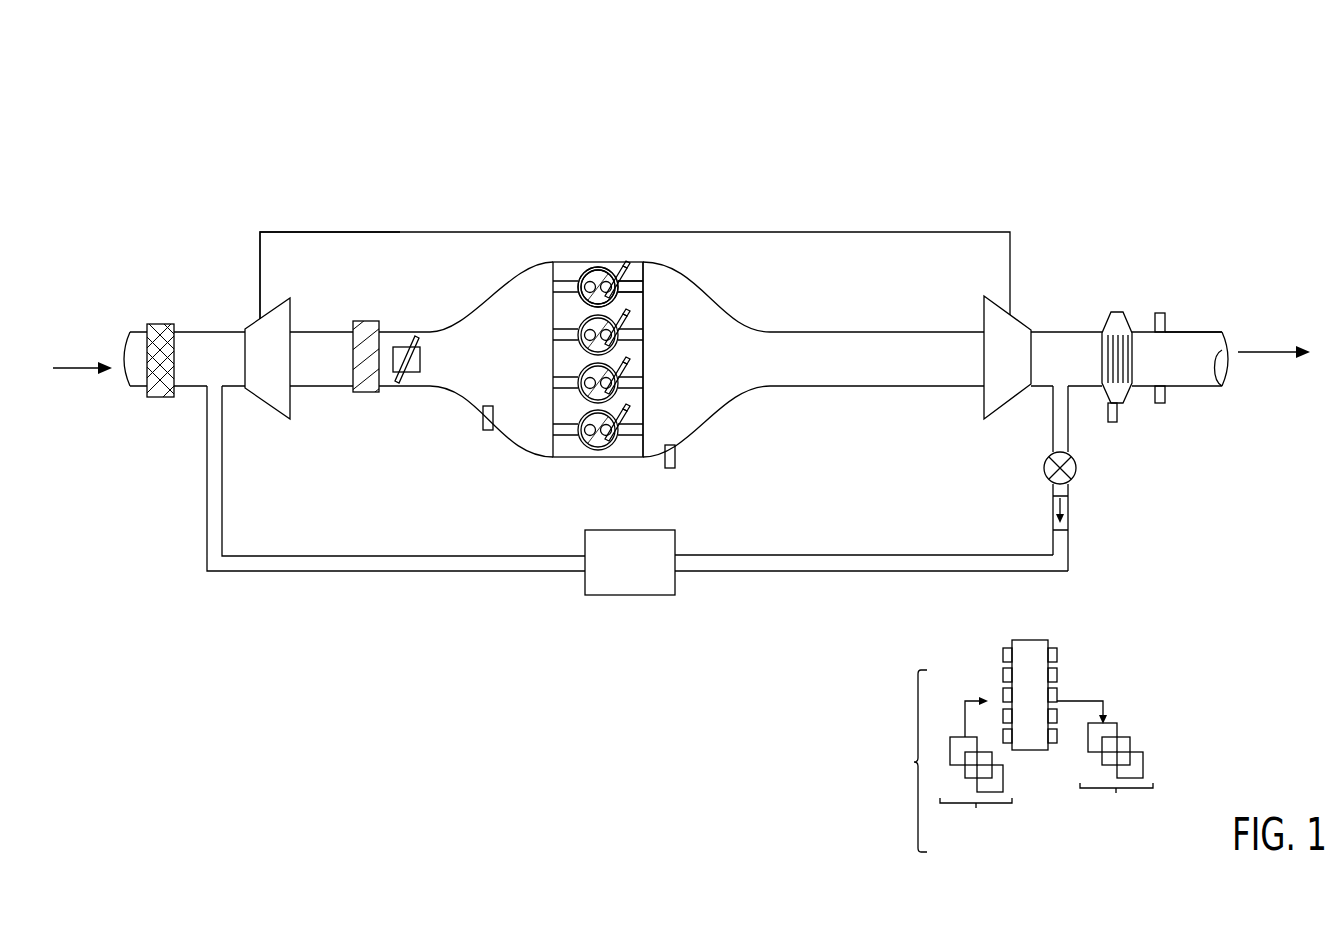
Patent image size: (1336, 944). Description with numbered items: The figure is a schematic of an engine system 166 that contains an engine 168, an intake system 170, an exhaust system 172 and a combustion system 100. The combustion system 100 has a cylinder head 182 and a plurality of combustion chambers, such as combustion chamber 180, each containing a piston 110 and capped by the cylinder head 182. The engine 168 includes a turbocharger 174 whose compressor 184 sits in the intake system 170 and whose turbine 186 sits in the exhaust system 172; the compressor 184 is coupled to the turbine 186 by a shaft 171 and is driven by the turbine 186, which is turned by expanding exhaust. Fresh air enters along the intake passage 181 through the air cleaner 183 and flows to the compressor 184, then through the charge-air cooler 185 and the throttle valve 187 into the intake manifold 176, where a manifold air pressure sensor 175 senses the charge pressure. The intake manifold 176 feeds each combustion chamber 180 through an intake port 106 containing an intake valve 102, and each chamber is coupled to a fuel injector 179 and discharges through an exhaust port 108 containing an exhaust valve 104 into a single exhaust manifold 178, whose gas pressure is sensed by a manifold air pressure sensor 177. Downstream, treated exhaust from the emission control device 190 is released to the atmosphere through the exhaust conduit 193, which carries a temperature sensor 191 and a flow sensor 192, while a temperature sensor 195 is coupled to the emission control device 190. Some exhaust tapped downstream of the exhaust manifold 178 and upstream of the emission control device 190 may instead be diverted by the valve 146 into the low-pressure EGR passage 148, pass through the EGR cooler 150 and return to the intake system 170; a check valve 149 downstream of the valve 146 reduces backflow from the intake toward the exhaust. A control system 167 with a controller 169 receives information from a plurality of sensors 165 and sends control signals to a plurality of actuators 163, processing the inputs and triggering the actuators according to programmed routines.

The engine system 166 is at (434, 82).
The engine 168 is at (597, 321).
The intake system 170 is at (158, 254).
The shaft 171 is at (743, 234).
The exhaust system 172 is at (1153, 251).
The turbocharger 174 is at (257, 208).
The manifold air pressure sensor 175 is at (483, 413).
The intake manifold 176 is at (518, 369).
The manifold air pressure sensor 177 is at (675, 448).
The exhaust manifold 178 is at (725, 369).
The fuel injector 179 is at (650, 270).
The combustion chamber 180 is at (609, 265).
The intake passage 181 is at (131, 388).
The cylinder head 182 is at (645, 362).
The air cleaner 183 is at (162, 323).
The compressor 184 is at (280, 366).
The charge-air cooler 185 is at (363, 321).
The turbine 186 is at (1023, 366).
The throttle valve 187 is at (419, 368).
The emission control device 190 is at (1105, 318).
The temperature sensor 191 is at (1165, 315).
The flow sensor 192 is at (1163, 401).
The exhaust conduit 193 is at (1220, 331).
The temperature sensor 195 is at (1112, 422).
The combustion system 100 is at (568, 309).
The intake valve 102 is at (578, 293).
The exhaust valve 104 is at (618, 302).
The intake port 106 is at (582, 280).
The exhaust port 108 is at (617, 283).
The piston 110 is at (590, 268).
The valve 146 is at (1076, 468).
The low-pressure EGR passage 148 is at (752, 571).
The check valve 149 is at (1069, 520).
The EGR cooler 150 is at (630, 562).
The actuators 163 is at (1106, 768).
The sensors 165 is at (976, 773).
The control system 167 is at (885, 761).
The controller 169 is at (1045, 704).